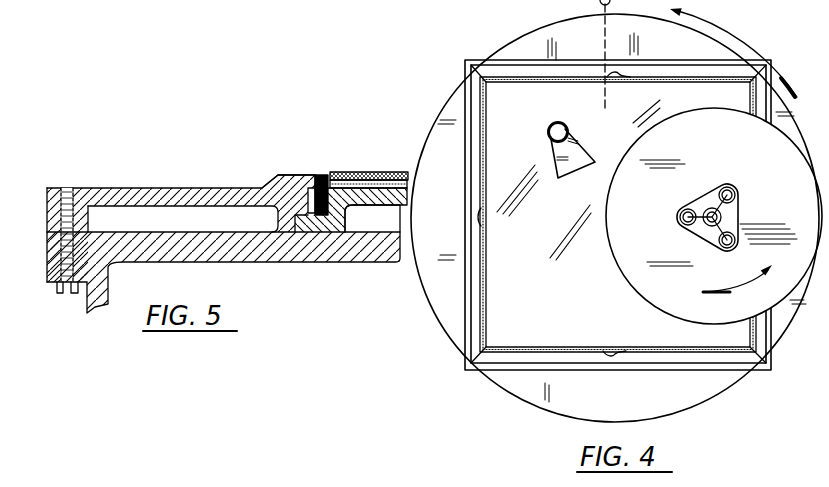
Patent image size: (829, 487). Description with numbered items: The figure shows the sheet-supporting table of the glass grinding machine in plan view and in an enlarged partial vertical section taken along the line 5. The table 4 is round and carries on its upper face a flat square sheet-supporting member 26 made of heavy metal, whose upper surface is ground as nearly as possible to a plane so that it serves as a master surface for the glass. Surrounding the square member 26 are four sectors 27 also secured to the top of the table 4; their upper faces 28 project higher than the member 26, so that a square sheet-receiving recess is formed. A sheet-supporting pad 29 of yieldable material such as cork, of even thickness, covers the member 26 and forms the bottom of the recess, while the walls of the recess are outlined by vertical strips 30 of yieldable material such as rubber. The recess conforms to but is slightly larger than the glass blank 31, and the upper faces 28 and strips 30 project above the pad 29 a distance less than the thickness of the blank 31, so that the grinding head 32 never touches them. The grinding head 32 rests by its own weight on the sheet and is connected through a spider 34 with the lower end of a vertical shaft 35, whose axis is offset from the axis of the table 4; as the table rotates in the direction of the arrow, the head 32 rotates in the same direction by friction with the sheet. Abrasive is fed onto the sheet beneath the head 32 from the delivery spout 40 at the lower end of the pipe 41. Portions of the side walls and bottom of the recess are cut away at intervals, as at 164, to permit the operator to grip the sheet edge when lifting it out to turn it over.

In FIG. 5, the table 4 is at (163, 257).
In FIG. 4, the section line 5— 5 is at (604, 62).
In FIG. 5, the sheet-supporting member 26 is at (388, 197).
In FIG. 5, the sectors 27 is at (173, 198).
In FIG. 4, the sectors 27 is at (552, 52).
In FIG. 5, the upper faces of sectors 28 is at (288, 183).
In FIG. 5, the sheet-supporting pad 29 is at (357, 165).
In FIG. 5, the vertical strips 30 is at (321, 174).
In FIG. 5, the glass blank 31 is at (388, 177).
In FIG. 4, the glass blank 31 is at (578, 197).
In FIG. 4, the grinding head 32 is at (653, 280).
In FIG. 4, the spider 34 is at (735, 207).
In FIG. 4, the vertical shaft 35 is at (712, 208).
In FIG. 4, the delivery spout 40 is at (573, 160).
In FIG. 4, the pipe 41 is at (563, 122).
In FIG. 4, the cut-away portions 164 is at (628, 74).